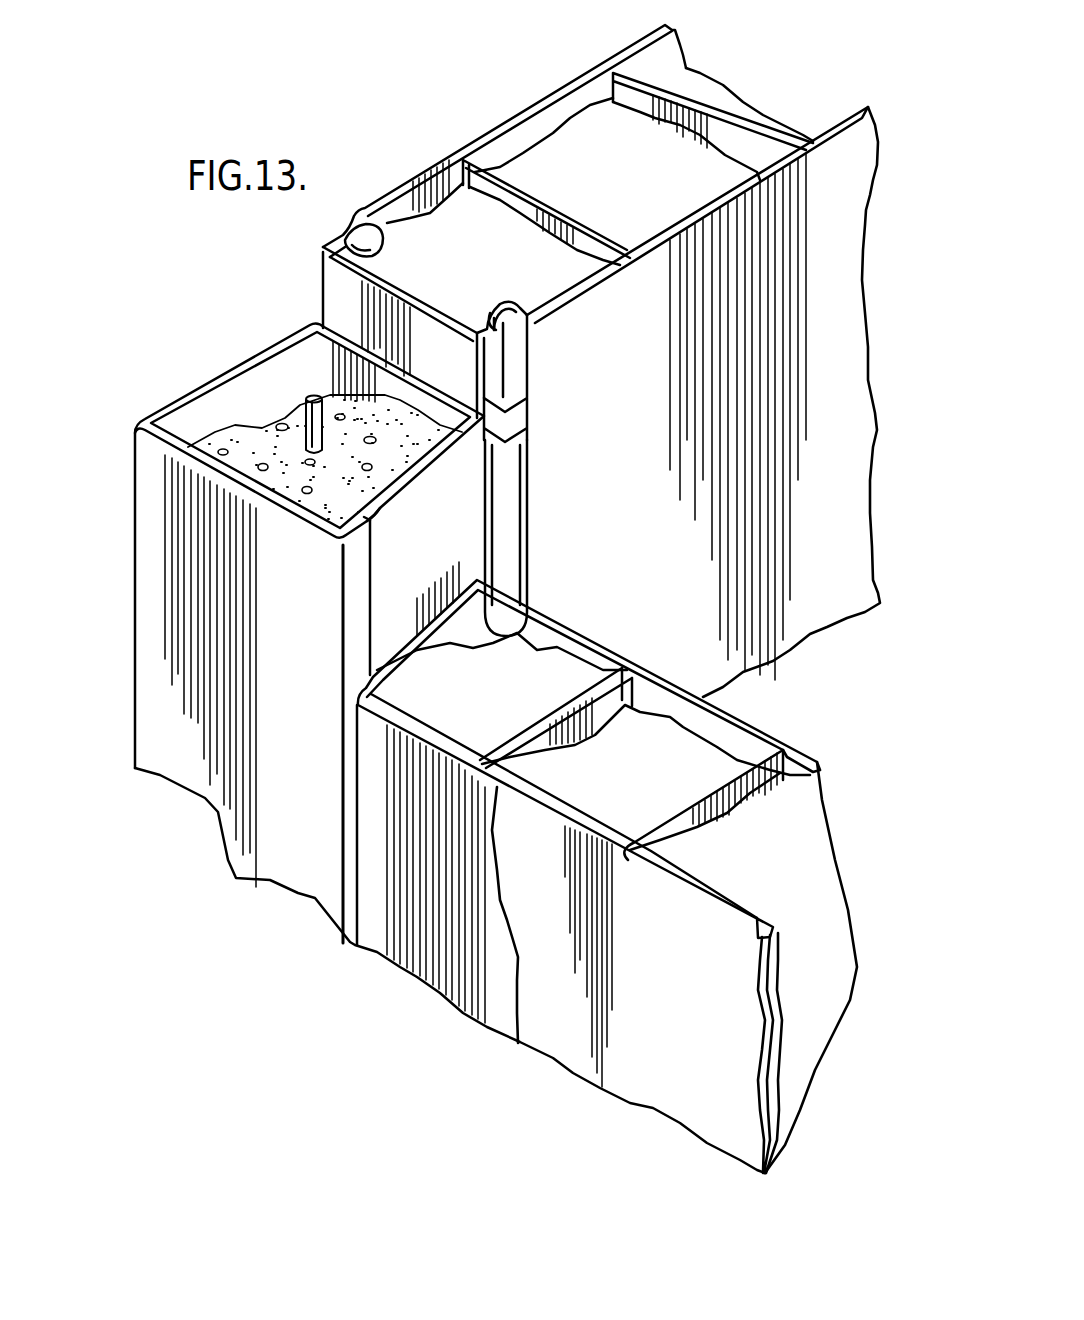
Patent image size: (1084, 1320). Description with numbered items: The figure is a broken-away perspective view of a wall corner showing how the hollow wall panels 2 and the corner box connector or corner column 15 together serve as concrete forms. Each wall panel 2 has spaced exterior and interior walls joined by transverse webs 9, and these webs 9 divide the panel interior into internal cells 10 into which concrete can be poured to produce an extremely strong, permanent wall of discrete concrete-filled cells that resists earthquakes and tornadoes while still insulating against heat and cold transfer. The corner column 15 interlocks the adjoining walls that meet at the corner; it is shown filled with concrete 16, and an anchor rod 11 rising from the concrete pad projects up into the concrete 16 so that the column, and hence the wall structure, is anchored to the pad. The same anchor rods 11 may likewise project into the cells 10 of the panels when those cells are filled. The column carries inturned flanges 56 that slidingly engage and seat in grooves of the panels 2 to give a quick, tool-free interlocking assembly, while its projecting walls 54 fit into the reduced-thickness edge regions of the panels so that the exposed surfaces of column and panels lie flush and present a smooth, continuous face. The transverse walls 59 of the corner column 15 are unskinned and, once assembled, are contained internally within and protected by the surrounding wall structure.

The wall panel 2 is at (860, 166).
The transverse web 9 is at (477, 160).
The internal cell 10 is at (566, 126).
The anchor rod 11 is at (297, 398).
The corner column 15 is at (133, 440).
The concrete 16 is at (247, 420).
The projecting wall 54 is at (322, 533).
The inturned flange 56 is at (520, 460).
The transverse wall 59 is at (317, 316).